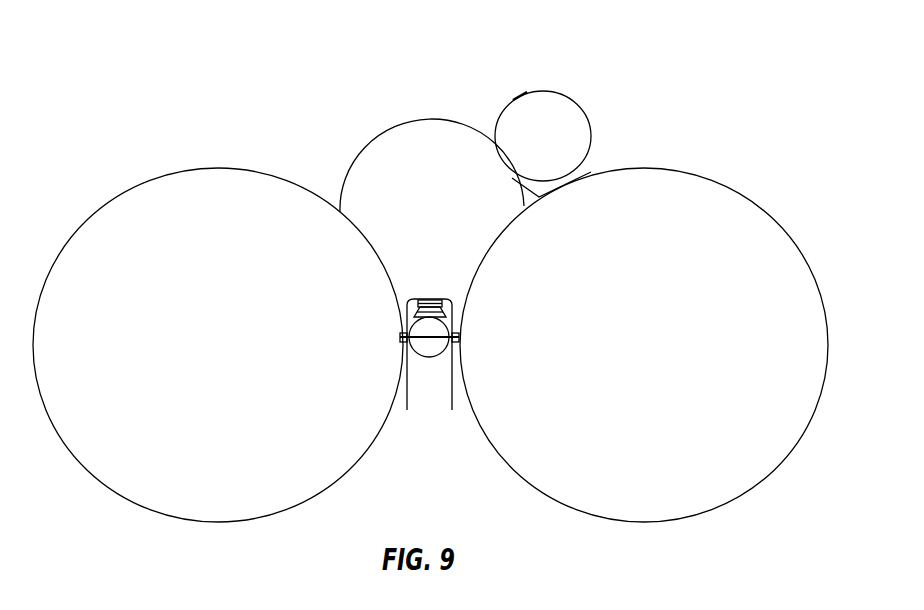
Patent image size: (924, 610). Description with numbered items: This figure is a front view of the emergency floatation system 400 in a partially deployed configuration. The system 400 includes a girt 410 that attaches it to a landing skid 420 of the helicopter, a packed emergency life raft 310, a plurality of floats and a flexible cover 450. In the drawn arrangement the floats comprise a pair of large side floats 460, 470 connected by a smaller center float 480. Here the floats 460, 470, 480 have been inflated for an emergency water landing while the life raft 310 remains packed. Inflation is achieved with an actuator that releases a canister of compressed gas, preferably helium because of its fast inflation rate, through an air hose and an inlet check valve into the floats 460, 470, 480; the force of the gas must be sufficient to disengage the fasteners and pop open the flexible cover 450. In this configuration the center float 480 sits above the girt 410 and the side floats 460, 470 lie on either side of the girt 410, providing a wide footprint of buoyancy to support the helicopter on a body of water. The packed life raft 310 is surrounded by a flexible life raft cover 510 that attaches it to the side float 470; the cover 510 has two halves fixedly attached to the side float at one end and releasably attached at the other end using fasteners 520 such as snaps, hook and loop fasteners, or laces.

The emergency floatation system 400 is at (114, 57).
The emergency life raft 310 is at (571, 90).
The girt 410 is at (438, 300).
The landing skid 420 is at (429, 396).
The flexible cover 450 is at (463, 419).
The large side float 460 is at (240, 347).
The large side float 470 is at (661, 347).
The center float 480 is at (453, 226).
The flexible life raft cover 510 is at (600, 157).
The fasteners 520 is at (514, 92).